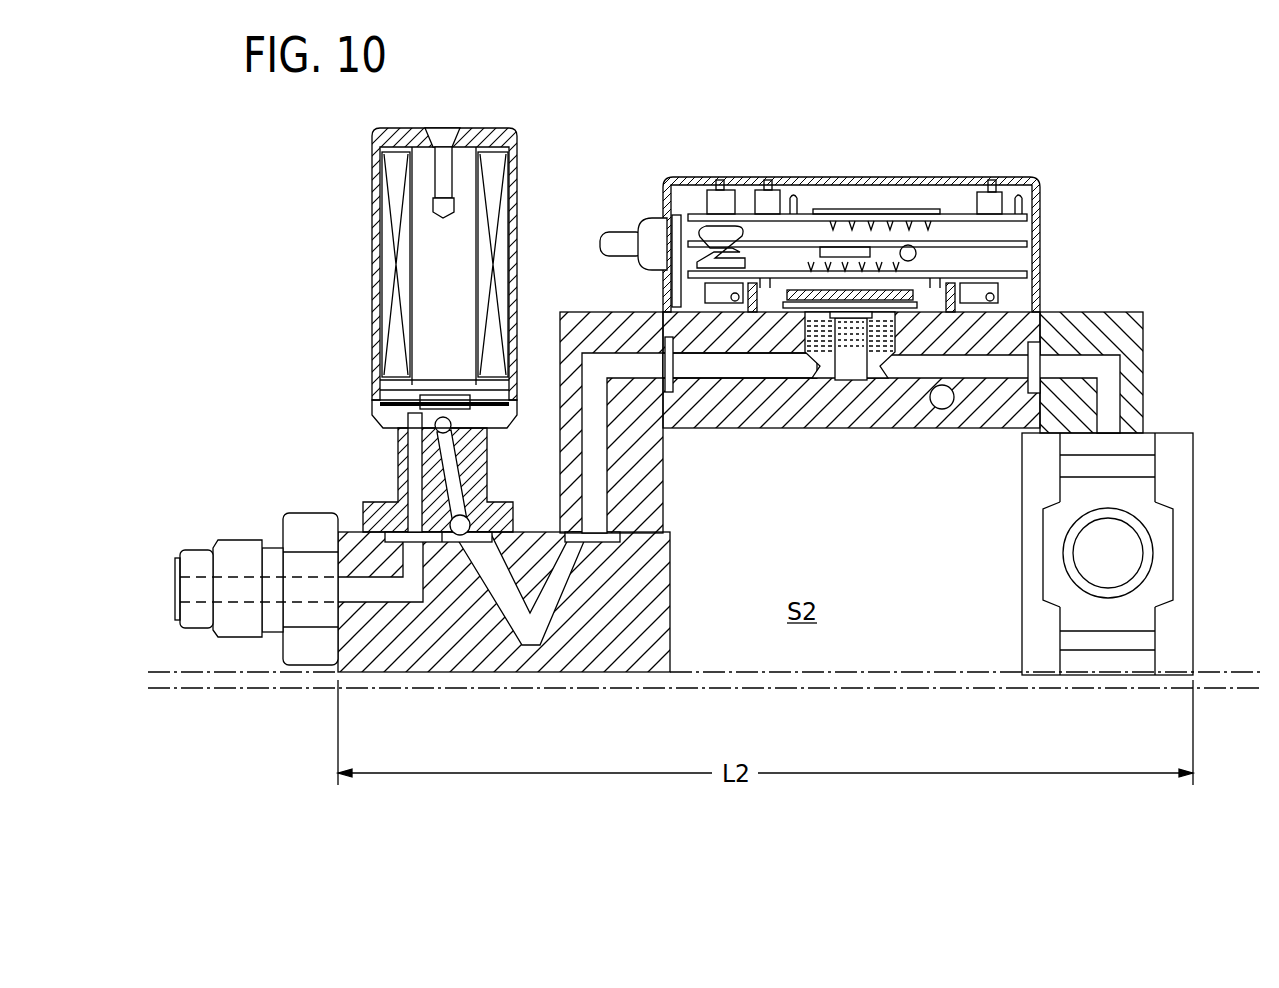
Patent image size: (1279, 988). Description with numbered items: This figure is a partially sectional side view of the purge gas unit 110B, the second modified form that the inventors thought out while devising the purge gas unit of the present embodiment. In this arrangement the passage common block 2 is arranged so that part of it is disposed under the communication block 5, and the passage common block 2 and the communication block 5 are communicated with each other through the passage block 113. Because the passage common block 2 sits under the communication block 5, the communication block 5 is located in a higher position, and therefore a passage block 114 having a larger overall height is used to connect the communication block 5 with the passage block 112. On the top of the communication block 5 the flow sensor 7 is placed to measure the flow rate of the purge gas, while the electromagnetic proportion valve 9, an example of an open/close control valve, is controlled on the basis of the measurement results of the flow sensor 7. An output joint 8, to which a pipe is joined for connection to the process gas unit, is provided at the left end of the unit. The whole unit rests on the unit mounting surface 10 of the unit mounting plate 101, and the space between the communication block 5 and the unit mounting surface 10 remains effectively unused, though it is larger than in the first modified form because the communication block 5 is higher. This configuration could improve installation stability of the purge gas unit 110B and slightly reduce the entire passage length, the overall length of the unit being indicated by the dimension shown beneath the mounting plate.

The passage common block 2 is at (1183, 463).
The communication block 5 is at (850, 406).
The flow sensor 7 is at (780, 177).
The output joint 8 is at (245, 545).
The electromagnetic proportion valve 9 is at (374, 243).
The unit mounting surface 10 is at (932, 672).
The unit mounting plate 101 is at (870, 680).
The purge gas unit 110B is at (901, 209).
The passage block 112 is at (566, 658).
The passage block 113 is at (948, 396).
The passage block 114 is at (642, 503).